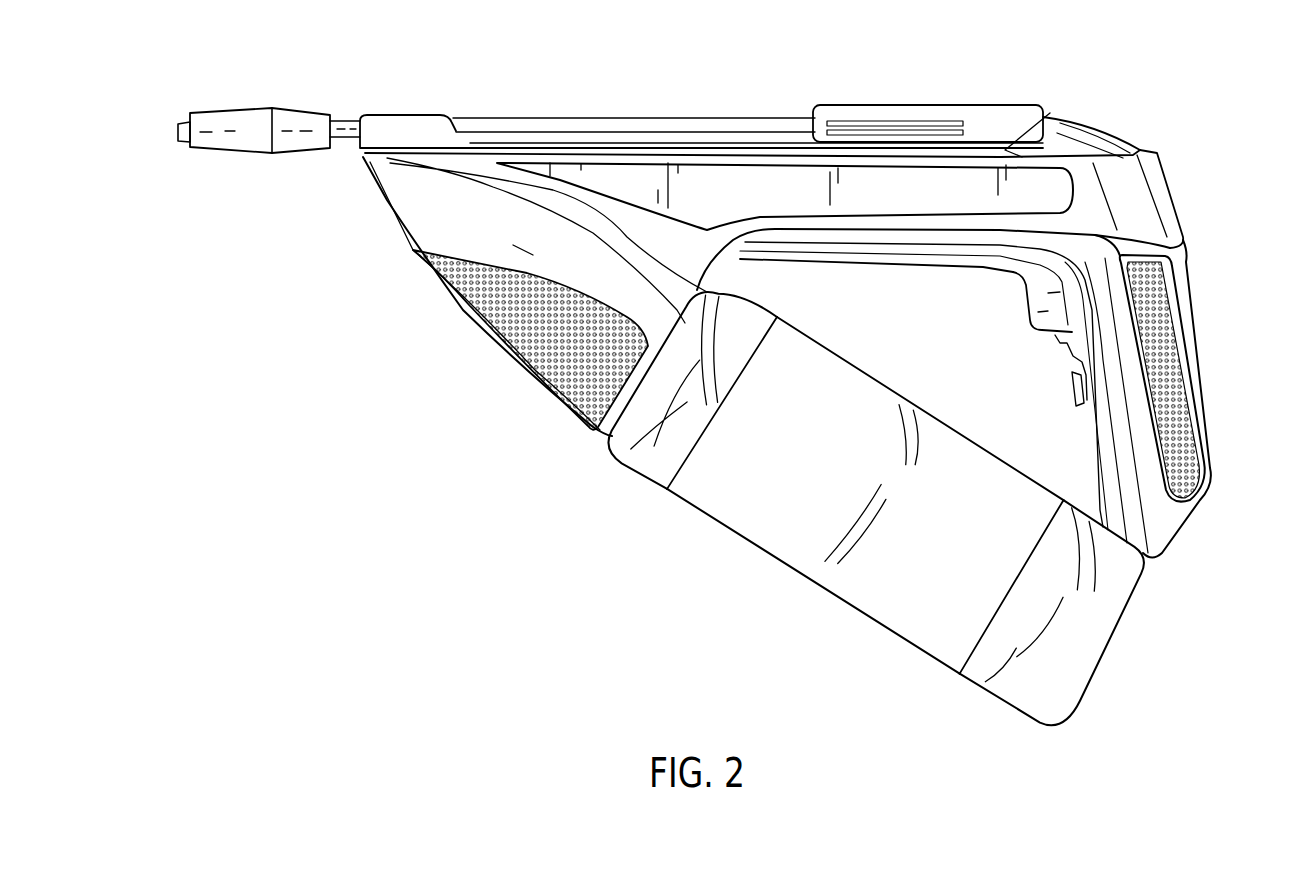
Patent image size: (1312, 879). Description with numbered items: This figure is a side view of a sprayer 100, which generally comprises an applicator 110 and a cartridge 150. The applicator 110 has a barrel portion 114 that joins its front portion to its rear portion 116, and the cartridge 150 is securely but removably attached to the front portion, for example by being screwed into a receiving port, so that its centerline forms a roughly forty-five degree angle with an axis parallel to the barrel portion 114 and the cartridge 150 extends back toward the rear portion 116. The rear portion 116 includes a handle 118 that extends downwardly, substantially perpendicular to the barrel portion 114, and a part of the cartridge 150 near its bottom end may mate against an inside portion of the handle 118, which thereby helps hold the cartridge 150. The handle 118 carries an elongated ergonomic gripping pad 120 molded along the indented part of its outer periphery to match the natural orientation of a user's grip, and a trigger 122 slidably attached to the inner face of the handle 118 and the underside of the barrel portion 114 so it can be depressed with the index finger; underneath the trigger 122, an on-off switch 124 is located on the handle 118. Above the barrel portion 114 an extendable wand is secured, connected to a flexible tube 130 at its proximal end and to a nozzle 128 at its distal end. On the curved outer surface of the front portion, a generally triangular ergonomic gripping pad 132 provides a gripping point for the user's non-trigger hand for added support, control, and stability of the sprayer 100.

The sprayer 100 is at (162, 64).
The applicator 110 is at (483, 232).
The barrel portion 114 is at (333, 60).
The rear portion 116 is at (355, 154).
The handle 118 is at (1167, 530).
The ergonomic gripping pad 120 is at (1170, 358).
The trigger 122 is at (1030, 293).
The on-off switch 124 is at (1070, 396).
The nozzle 128 is at (257, 123).
The flexible tube 130 is at (1042, 123).
The ergonomic gripping pad 132 is at (498, 342).
The cartridge 150 is at (779, 459).